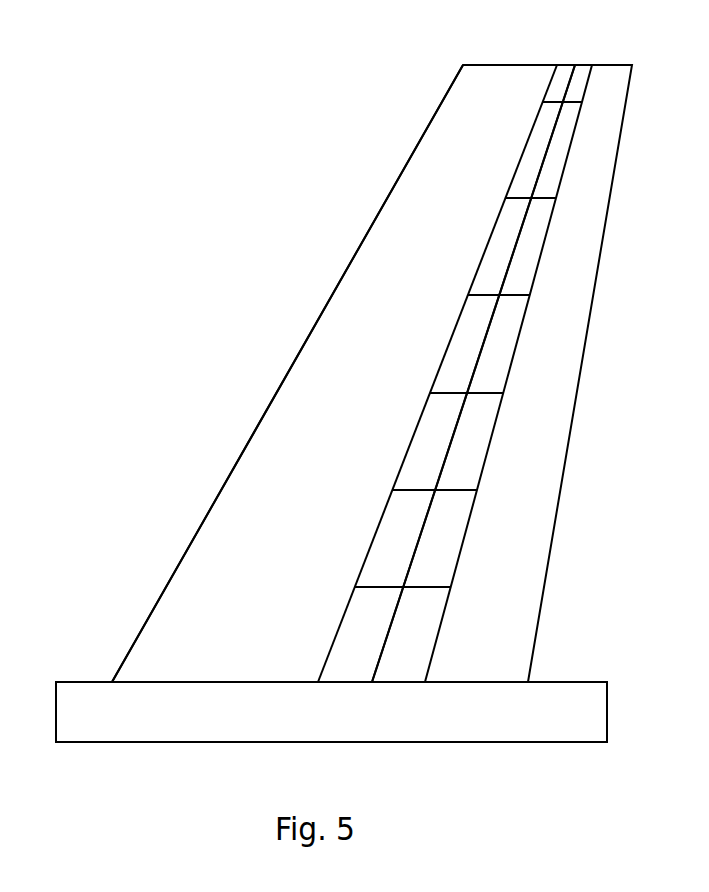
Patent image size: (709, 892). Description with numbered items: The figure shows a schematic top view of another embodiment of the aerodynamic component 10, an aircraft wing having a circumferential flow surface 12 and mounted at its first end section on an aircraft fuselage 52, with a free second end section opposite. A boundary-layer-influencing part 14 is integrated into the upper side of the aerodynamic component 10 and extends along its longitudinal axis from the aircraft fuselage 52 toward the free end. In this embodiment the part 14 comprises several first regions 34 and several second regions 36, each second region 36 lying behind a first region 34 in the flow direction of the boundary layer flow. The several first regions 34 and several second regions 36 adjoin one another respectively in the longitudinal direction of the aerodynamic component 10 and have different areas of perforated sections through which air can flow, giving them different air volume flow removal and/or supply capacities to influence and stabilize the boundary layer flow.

The aerodynamic component 10 is at (390, 135).
The circumferential flow surface 12 is at (320, 368).
The boundary-layer-influencing part 14 is at (412, 405).
The first region 34 is at (562, 77).
The second region 36 is at (583, 77).
The aircraft fuselage 52 is at (108, 707).